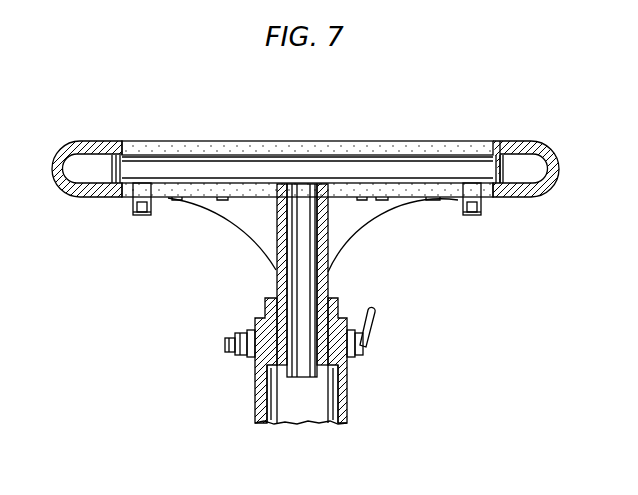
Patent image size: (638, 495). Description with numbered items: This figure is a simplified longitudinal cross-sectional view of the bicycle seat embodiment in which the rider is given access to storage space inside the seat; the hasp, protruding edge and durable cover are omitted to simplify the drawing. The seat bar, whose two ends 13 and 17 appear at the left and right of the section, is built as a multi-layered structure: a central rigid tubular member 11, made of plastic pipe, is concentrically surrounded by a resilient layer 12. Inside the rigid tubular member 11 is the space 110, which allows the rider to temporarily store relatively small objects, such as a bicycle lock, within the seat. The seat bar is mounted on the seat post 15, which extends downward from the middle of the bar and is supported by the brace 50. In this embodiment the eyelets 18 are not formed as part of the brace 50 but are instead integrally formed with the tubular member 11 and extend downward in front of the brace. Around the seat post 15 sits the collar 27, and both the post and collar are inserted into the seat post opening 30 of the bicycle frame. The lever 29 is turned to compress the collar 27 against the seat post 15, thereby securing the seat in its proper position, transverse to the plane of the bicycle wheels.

The rigid tubular member 11 is at (418, 157).
The resilient layer 12 is at (470, 142).
The end 13 is at (97, 143).
The end 17 is at (525, 143).
The eyelets 18 is at (140, 215).
The brace 50 is at (258, 220).
The space 110 is at (452, 172).
The seat post 15 is at (330, 279).
The collar 27 is at (333, 309).
The lever 29 is at (373, 318).
The seat post opening 30 is at (294, 405).